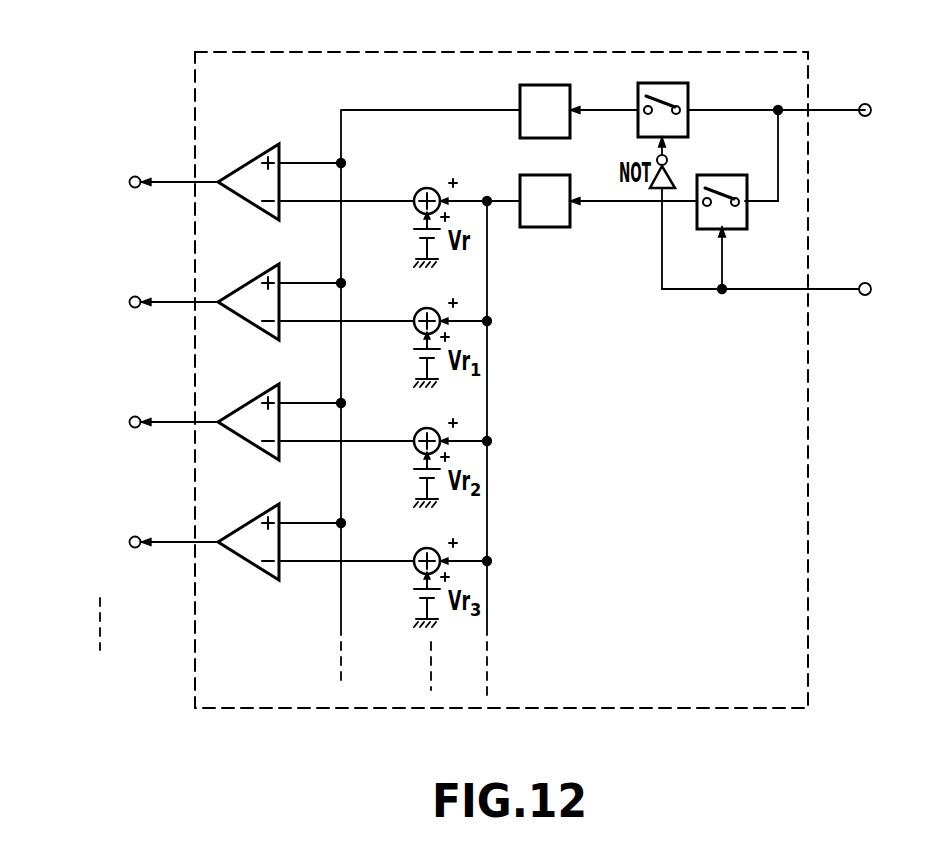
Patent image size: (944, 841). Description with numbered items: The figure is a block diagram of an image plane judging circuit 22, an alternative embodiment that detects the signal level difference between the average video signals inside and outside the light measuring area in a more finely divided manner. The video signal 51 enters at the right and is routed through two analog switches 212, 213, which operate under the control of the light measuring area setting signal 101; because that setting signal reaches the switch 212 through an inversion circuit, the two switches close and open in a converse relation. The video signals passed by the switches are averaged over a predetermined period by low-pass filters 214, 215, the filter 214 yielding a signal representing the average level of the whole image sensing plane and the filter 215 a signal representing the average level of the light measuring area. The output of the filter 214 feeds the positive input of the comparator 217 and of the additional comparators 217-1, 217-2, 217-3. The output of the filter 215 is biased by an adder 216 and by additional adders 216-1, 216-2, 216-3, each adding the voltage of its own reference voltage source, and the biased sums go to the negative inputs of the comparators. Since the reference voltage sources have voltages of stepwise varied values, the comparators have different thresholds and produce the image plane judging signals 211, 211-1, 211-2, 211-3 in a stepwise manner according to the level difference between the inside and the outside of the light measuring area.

The image plane judging circuit 22 is at (323, 52).
The comparator 217 is at (258, 162).
The comparator 217-1 is at (315, 281).
The comparator 217-2 is at (315, 401).
The comparator 217-3 is at (315, 521).
The adder 216 is at (419, 188).
The adder 216-1 is at (424, 326).
The adder 216-2 is at (424, 446).
The adder 216-3 is at (424, 566).
The low-pass filter 214 is at (520, 86).
The low-pass filter 215 is at (541, 230).
The analog switch 212 is at (690, 96).
The analog switch 213 is at (745, 228).
The image plane judging signal 211 is at (129, 182).
The image plane judging signal 211-1 is at (132, 314).
The image plane judging signal 211-2 is at (132, 436).
The image plane judging signal 211-3 is at (132, 553).
The video signal 51 is at (866, 116).
The light measuring area setting signal 101 is at (866, 295).